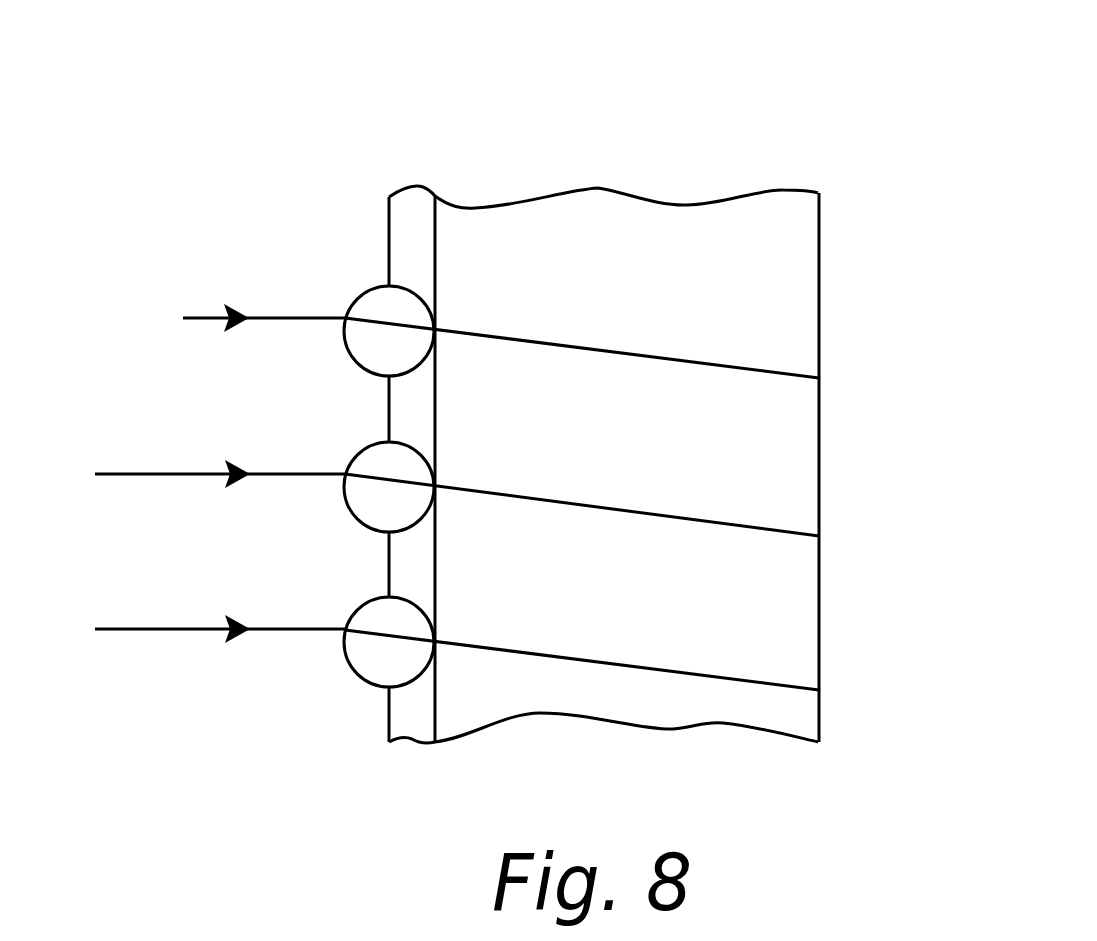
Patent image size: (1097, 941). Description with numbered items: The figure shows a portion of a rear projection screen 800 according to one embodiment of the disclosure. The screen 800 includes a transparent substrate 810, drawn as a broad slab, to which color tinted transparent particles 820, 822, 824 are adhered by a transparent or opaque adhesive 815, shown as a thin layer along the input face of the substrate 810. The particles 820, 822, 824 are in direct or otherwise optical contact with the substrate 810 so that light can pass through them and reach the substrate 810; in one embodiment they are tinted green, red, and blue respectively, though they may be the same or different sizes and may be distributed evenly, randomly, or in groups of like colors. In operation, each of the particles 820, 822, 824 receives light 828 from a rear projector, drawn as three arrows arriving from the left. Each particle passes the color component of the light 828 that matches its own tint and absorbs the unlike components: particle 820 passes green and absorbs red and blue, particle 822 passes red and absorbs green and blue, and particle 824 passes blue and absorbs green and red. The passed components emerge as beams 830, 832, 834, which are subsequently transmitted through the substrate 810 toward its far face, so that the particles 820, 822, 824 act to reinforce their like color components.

The rear projection screen 800 is at (814, 137).
The transparent substrate 810 is at (634, 282).
The adhesive 815 is at (398, 203).
The transparent particle 820 is at (362, 296).
The transparent particle 822 is at (362, 452).
The transparent particle 824 is at (362, 606).
The light 828 is at (205, 316).
The beam 830 is at (760, 372).
The beam 832 is at (762, 524).
The beam 834 is at (762, 680).